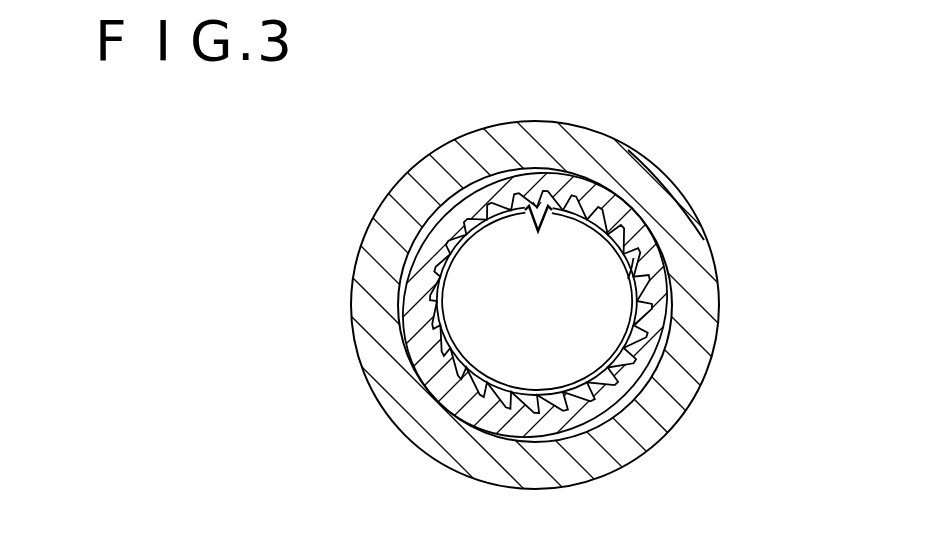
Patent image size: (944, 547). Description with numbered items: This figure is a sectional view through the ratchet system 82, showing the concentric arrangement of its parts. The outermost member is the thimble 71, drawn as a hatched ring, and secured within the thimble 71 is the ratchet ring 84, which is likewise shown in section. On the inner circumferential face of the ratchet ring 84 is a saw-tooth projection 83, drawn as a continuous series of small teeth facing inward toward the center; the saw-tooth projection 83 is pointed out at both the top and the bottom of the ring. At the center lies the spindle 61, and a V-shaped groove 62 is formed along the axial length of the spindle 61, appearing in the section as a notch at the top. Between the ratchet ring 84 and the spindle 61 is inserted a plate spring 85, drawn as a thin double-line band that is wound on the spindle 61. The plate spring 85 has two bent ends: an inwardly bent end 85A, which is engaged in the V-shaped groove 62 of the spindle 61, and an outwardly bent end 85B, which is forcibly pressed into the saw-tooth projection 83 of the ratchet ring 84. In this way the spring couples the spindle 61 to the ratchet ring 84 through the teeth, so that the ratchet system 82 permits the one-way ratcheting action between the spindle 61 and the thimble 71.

The thimble 71 is at (412, 183).
The ratchet system 82 is at (723, 191).
The saw-tooth projection 83 is at (588, 200).
The ratchet ring 84 is at (502, 177).
The plate spring 85 is at (557, 393).
The inwardly bent end 85A is at (524, 214).
The outwardly bent end 85B is at (630, 243).
The spindle 61 is at (613, 309).
The V-shaped groove 62 is at (546, 226).